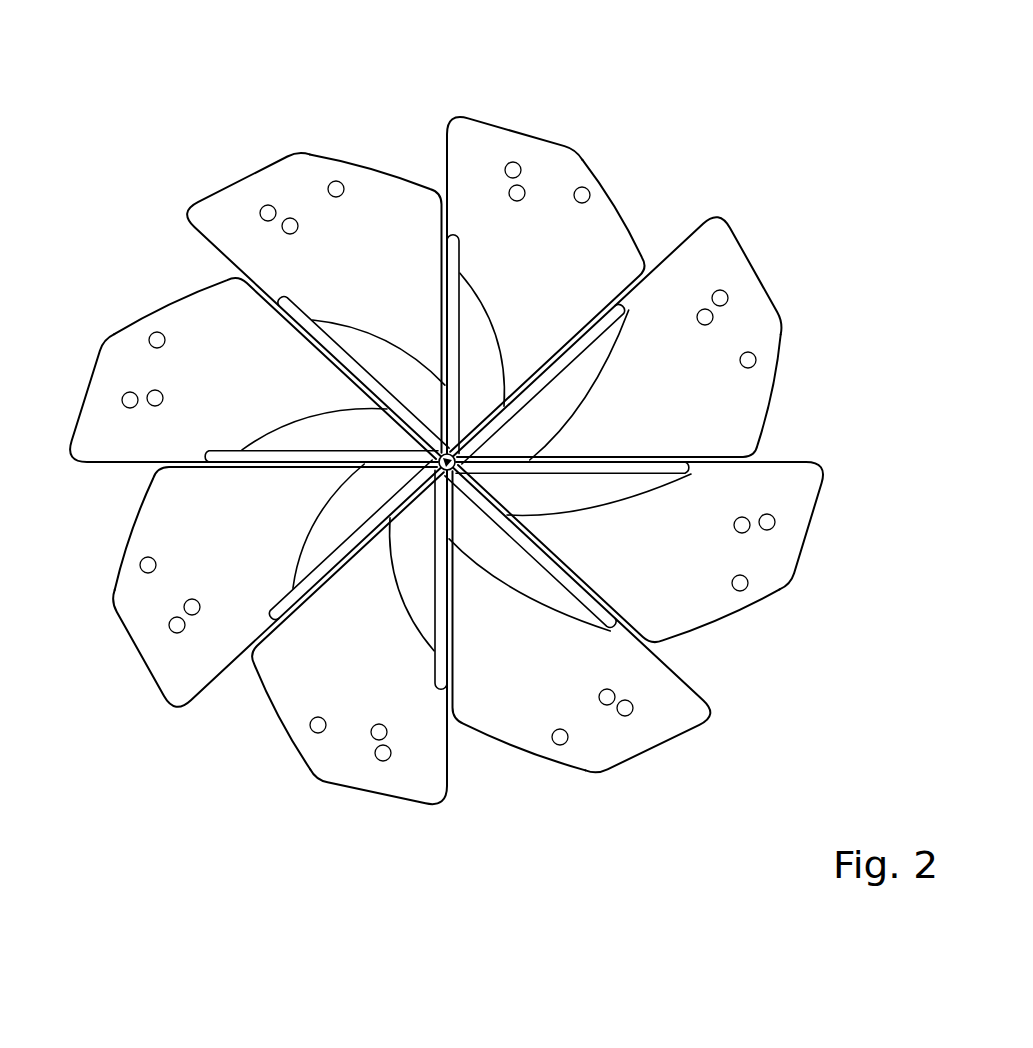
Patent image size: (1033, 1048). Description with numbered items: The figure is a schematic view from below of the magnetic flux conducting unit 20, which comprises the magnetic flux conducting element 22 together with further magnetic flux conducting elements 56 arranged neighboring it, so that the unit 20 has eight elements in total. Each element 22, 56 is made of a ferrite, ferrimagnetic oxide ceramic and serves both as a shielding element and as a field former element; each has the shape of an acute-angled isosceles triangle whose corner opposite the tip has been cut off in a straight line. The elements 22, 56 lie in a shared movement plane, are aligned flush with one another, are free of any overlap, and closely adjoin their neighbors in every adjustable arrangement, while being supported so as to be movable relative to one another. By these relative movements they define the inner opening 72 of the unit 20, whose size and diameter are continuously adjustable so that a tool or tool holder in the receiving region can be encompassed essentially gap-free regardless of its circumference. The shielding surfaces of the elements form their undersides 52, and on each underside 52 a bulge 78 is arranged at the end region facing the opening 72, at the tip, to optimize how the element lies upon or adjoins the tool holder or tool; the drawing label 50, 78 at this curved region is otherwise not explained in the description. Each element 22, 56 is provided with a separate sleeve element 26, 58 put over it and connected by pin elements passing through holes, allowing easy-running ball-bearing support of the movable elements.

The magnetic flux conducting unit 20 is at (682, 140).
The magnetic flux conducting element 22 is at (551, 184).
The sleeve element 26 is at (455, 238).
The curved inner edge 50 is at (473, 346).
The underside 52 is at (594, 233).
The further magnetic flux conducting elements 56 is at (292, 204).
The sleeve element 58 is at (298, 303).
The inner opening 72 is at (372, 497).
The bulge 78 is at (482, 339).